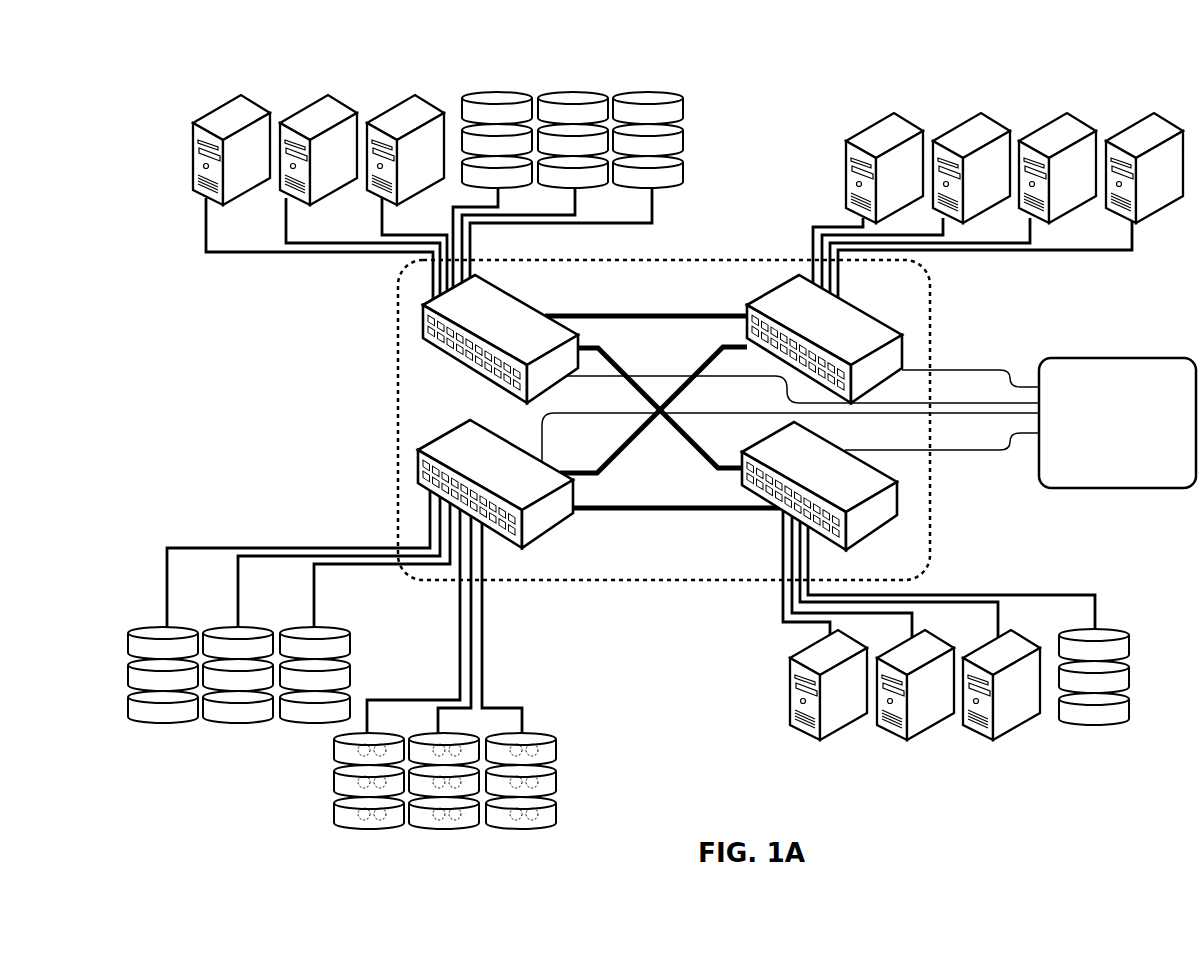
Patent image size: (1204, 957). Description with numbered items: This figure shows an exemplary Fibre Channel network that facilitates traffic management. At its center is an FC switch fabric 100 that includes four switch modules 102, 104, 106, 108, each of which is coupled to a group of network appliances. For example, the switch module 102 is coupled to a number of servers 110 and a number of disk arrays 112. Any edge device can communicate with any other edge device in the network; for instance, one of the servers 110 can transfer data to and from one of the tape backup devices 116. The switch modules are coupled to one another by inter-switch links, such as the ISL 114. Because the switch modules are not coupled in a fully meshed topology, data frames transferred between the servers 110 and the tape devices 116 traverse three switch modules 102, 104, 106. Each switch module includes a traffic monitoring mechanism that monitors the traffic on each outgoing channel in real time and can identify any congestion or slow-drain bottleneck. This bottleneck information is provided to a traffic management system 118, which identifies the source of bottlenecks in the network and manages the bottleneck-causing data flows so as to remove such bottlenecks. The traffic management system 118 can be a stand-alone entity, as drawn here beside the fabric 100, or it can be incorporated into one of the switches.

The FC switch fabric 100 is at (664, 420).
The switch module 102 is at (500, 339).
The switch module 104 is at (824, 339).
The switch module 106 is at (495, 484).
The switch module 108 is at (819, 486).
The servers 110 is at (200, 95).
The disk arrays 112 is at (457, 95).
The inter-switch link 114 is at (625, 314).
The tape backup devices 116 is at (323, 820).
The traffic management system 118 is at (1117, 423).